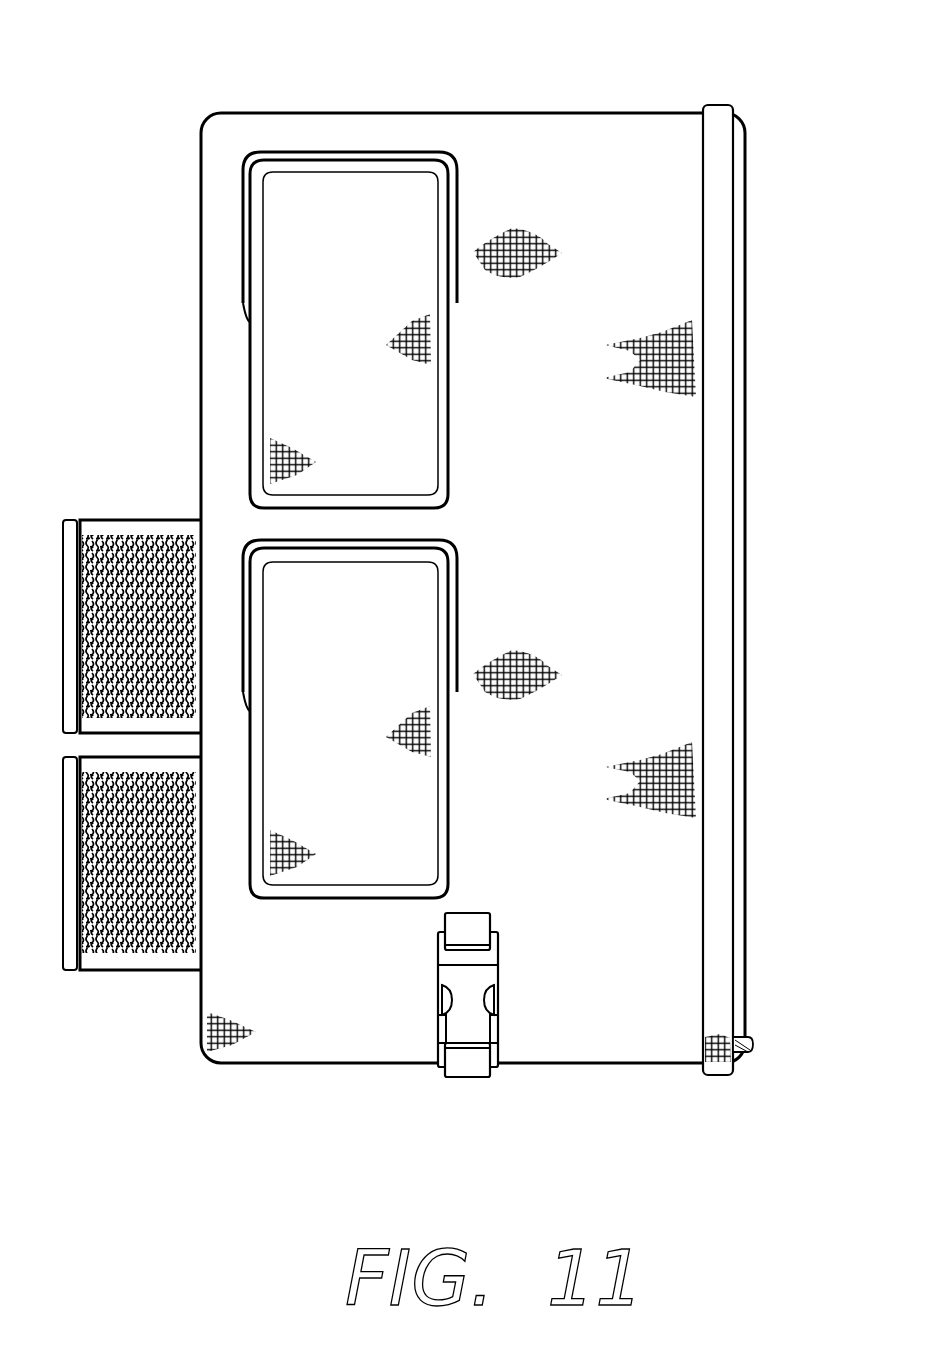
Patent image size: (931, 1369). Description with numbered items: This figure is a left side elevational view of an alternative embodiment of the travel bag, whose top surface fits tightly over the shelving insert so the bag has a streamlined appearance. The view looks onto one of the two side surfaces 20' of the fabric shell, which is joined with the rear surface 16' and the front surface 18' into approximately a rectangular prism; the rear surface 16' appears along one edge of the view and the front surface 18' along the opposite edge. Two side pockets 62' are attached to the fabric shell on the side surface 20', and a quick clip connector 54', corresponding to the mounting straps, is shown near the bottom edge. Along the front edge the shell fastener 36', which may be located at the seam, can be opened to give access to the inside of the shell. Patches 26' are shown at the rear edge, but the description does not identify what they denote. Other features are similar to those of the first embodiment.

The rear surface 16' is at (415, 588).
The front surface 18' is at (785, 590).
The side surface 20' is at (463, 532).
The hook-and-loop fastener patch 26' is at (124, 748).
The shell fastener 36' is at (797, 1001).
The quick clip connector 54' is at (438, 1035).
The side pocket 62' is at (350, 510).